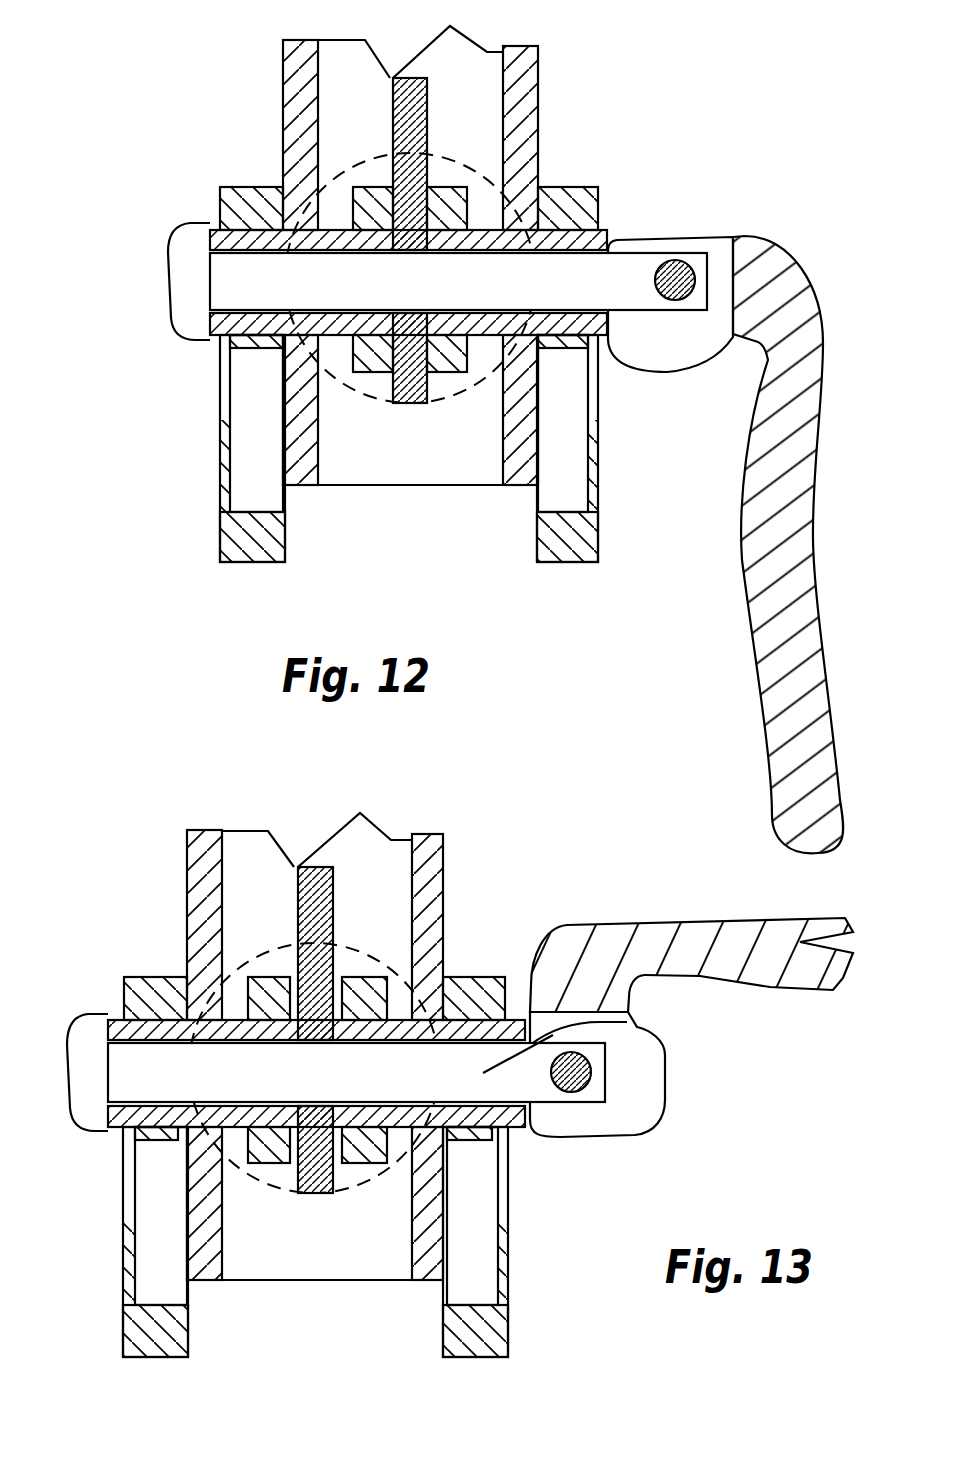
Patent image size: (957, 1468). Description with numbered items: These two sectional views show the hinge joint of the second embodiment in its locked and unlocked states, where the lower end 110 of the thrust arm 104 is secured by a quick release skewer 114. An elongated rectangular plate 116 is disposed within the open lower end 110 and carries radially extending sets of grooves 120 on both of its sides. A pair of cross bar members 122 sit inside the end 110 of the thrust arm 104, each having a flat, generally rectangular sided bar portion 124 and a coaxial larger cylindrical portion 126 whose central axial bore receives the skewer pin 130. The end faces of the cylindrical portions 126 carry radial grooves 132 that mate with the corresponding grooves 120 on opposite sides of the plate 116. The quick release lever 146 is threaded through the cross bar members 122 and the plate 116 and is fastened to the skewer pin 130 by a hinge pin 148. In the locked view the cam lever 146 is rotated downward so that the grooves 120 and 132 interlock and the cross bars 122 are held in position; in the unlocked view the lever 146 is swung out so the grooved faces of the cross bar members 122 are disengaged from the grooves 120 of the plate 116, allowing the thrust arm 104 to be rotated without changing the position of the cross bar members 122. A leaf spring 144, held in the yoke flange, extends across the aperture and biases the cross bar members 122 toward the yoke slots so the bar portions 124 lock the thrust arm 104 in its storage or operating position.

In FIG. 12, the thrust arm 104 is at (540, 98).
In FIG. 12, the lower end of the thrust arm 110 is at (535, 133).
In FIG. 13, the lower end of the thrust arm 110 is at (357, 988).
In FIG. 12, the quick release skewer 114 is at (751, 515).
In FIG. 13, the quick release skewer 114 is at (691, 958).
In FIG. 12, the plate 116 is at (428, 99).
In FIG. 13, the grooves 120 is at (341, 988).
In FIG. 12, the cross bar members 122 is at (343, 345).
In FIG. 12, the bar portion 124 is at (320, 210).
In FIG. 13, the bar portion 124 is at (448, 1010).
In FIG. 12, the cylindrical portion 126 is at (368, 205).
In FIG. 13, the cylindrical portion 126 is at (430, 898).
In FIG. 12, the skewer pin 130 is at (633, 235).
In FIG. 13, the skewer pin 130 is at (623, 1020).
In FIG. 13, the radial grooves 132 is at (292, 1170).
In FIG. 12, the leaf spring 144 is at (562, 345).
In FIG. 12, the quick release lever 146 is at (822, 403).
In FIG. 13, the quick release lever 146 is at (691, 931).
In FIG. 12, the hinge pin 148 is at (690, 273).
In FIG. 13, the hinge pin 148 is at (587, 1087).